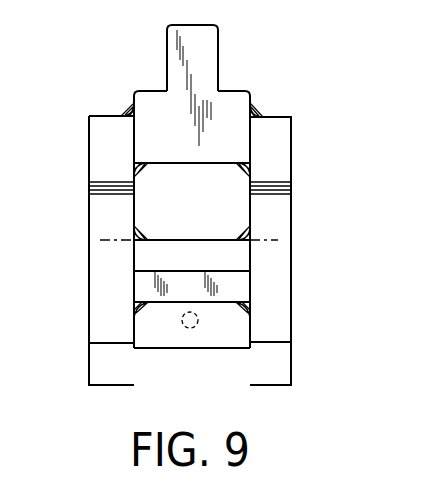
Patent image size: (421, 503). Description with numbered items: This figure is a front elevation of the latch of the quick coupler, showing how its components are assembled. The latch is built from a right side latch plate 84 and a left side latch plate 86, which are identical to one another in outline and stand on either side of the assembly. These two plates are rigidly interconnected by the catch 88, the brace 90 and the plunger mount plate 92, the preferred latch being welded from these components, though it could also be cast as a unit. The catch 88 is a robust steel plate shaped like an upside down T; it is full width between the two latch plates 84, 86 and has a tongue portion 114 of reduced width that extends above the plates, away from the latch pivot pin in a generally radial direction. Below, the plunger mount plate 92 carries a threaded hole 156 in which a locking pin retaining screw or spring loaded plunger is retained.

The catch tongue 114 is at (218, 54).
The catch 88 is at (178, 135).
The left side latch plate 86 is at (89, 162).
The right side latch plate 84 is at (292, 215).
The brace 90 is at (173, 251).
The plunger mount plate 92 is at (180, 350).
The threaded hole 156 is at (196, 328).